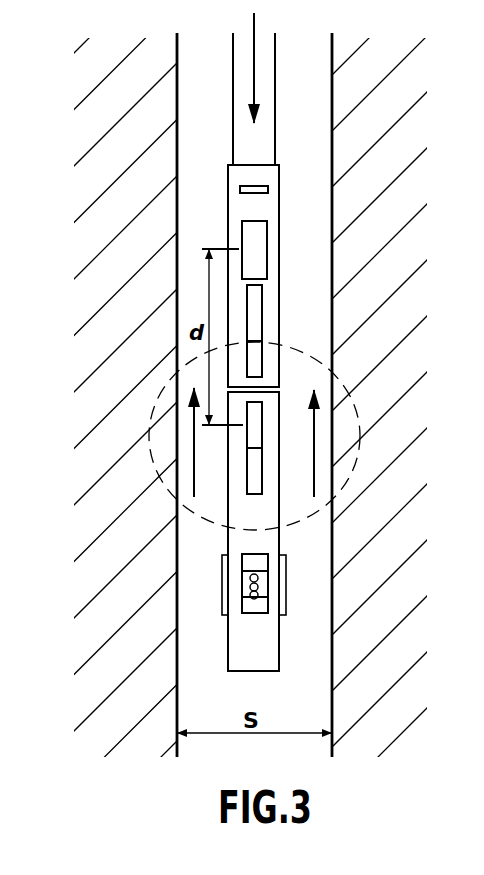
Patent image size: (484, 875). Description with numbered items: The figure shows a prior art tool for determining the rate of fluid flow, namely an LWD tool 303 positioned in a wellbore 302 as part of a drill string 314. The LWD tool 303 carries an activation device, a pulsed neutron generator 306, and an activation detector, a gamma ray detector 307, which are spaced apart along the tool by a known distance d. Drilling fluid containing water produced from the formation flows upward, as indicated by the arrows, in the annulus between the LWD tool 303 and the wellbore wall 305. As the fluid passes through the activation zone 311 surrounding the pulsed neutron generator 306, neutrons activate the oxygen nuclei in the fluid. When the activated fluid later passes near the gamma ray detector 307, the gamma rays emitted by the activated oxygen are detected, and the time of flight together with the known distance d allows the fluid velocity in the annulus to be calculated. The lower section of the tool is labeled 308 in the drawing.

The wellbore 302 is at (211, 77).
The wellbore wall 305 is at (332, 73).
The drill string 314 is at (233, 148).
The LWD tool 303 is at (285, 283).
The gamma ray detector 307 is at (252, 238).
The pulsed neutron generator 306 is at (258, 423).
The activation zone 311 is at (230, 522).
The bottom section of tool 308 is at (272, 647).